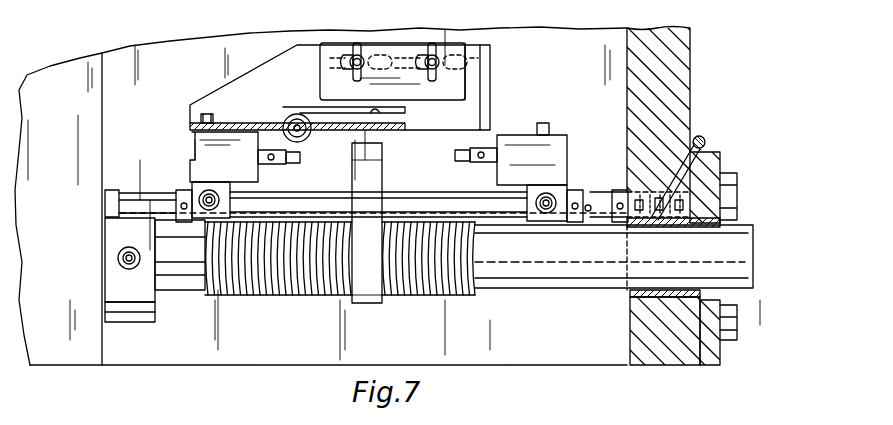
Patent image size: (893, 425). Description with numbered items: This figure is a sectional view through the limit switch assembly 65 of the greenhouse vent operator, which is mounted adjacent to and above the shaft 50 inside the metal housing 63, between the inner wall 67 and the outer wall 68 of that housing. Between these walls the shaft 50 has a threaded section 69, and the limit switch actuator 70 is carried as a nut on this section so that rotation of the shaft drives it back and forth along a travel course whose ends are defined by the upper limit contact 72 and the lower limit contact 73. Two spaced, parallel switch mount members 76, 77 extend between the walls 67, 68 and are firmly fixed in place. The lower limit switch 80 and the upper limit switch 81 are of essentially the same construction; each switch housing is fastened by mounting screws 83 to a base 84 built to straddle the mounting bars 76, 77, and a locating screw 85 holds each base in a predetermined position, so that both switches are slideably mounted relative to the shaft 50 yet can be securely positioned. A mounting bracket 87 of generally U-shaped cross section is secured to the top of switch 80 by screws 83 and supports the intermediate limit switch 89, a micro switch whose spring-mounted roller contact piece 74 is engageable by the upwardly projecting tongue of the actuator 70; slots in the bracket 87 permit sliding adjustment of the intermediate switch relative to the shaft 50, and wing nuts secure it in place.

The shaft 50 is at (558, 278).
The housing 63 is at (189, 49).
The limit switch assembly 65 is at (294, 48).
The inner wall 67 is at (667, 36).
The outer wall 68 is at (41, 78).
The threaded section 69 is at (296, 296).
The limit switch actuator 70 is at (369, 305).
The upper limit contact 72 is at (289, 165).
The lower limit contact 73 is at (468, 162).
The intermediate limit switch contact piece 74 is at (306, 142).
The switch mount member 76 is at (136, 200).
The switch mount member 77 is at (600, 190).
The lower limit switch 80 is at (196, 158).
The upper limit switch 81 is at (558, 152).
The mounting screws 83 is at (202, 113).
The base 84 is at (200, 224).
The locating screw 85 is at (212, 192).
The mounting bracket 87 is at (257, 80).
The intermediate limit switch 89 is at (460, 78).